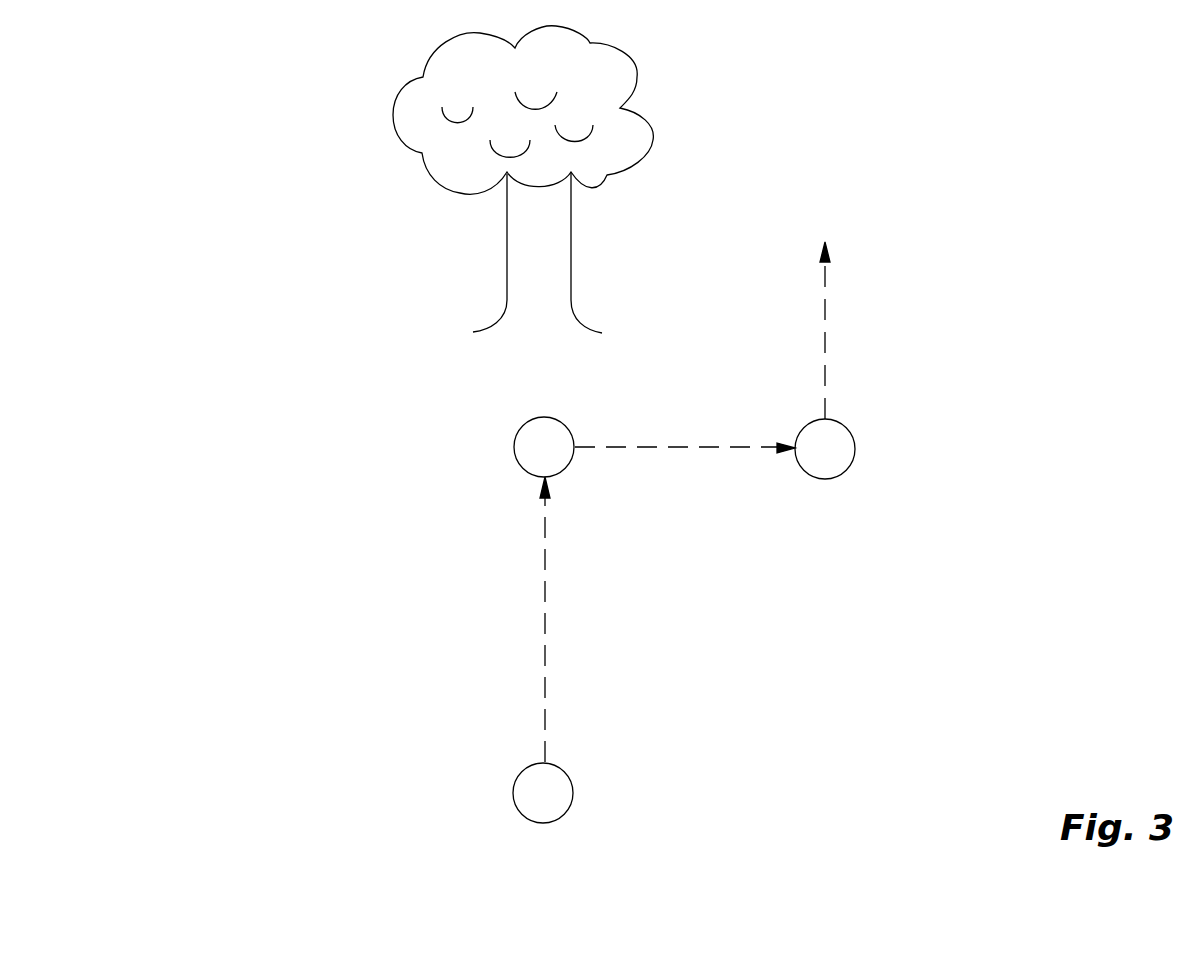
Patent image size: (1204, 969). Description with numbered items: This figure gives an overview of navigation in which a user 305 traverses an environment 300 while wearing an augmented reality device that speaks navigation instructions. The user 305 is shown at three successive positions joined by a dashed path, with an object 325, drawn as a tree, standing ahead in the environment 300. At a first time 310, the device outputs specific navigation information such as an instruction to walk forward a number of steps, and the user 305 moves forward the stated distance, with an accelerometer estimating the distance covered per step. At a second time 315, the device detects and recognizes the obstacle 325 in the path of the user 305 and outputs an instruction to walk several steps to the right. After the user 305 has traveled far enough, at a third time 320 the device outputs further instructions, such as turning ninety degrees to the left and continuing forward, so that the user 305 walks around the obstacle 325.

The environment 300 is at (200, 163).
The user 305 is at (513, 447).
The first time 310 is at (622, 807).
The second time 315 is at (603, 507).
The third time 320 is at (830, 517).
The obstacle 325 is at (393, 122).